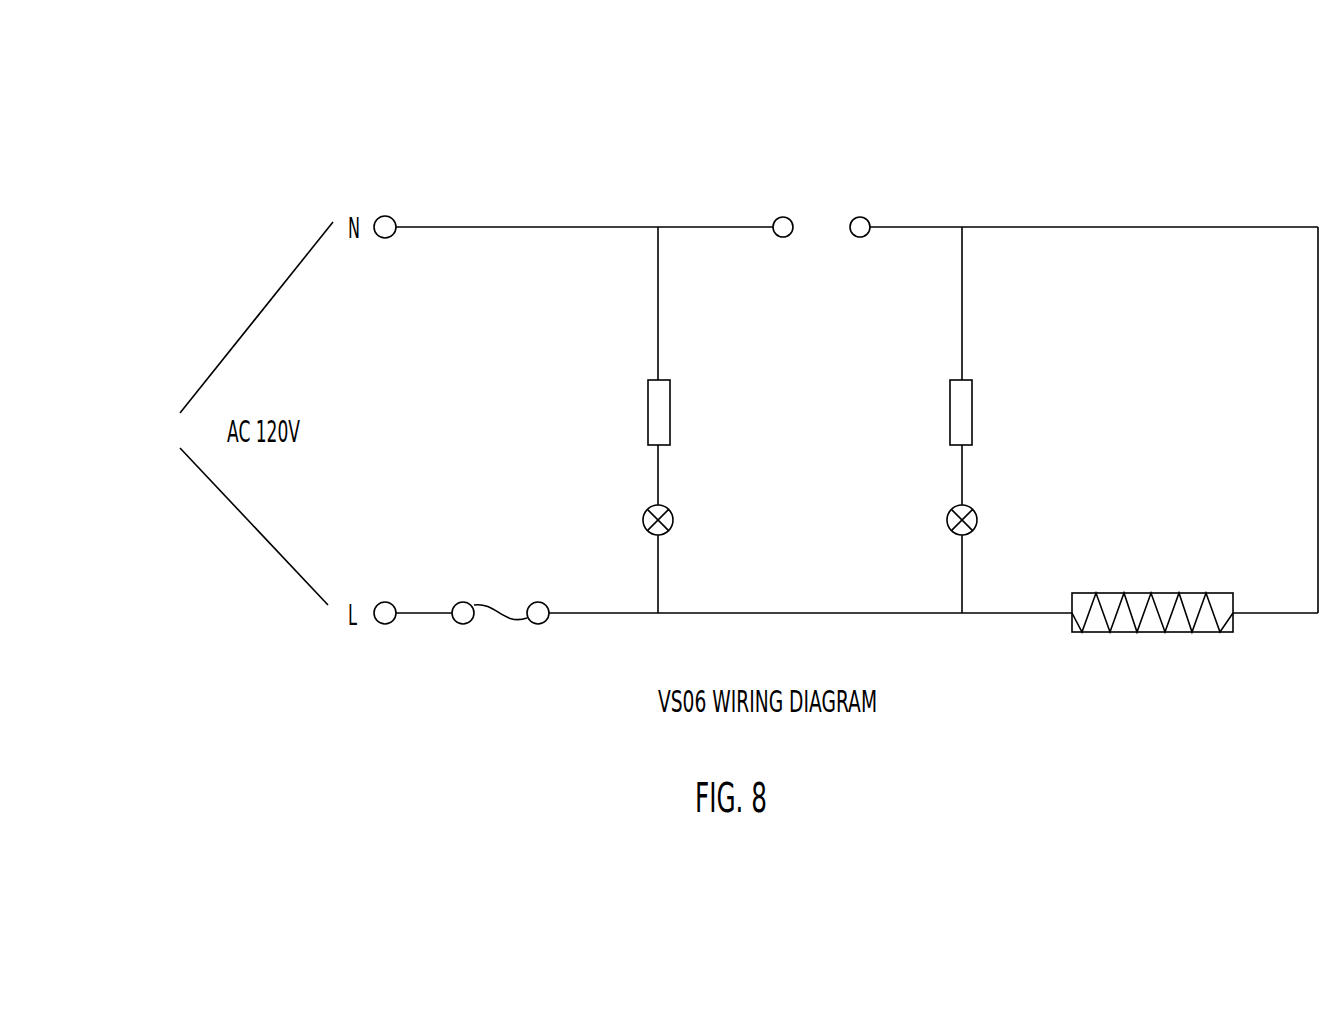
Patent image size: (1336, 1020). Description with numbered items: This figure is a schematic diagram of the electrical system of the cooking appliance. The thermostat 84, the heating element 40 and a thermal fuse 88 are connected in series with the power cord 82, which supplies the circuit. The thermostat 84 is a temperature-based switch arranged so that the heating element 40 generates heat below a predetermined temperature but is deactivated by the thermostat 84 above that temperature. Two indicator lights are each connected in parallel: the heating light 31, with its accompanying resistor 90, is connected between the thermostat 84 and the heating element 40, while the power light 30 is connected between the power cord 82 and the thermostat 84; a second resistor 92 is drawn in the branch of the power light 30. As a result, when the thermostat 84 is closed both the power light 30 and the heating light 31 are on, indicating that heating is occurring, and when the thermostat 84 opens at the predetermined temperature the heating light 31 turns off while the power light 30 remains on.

The power cord 82 is at (145, 448).
The thermostat 84 is at (828, 217).
The thermal fuse 88 is at (475, 670).
The resistor 92 is at (715, 392).
The heating light 31 is at (753, 535).
The resistor 90 is at (1017, 392).
The power light 30 is at (1035, 537).
The heating element 40 is at (1233, 625).